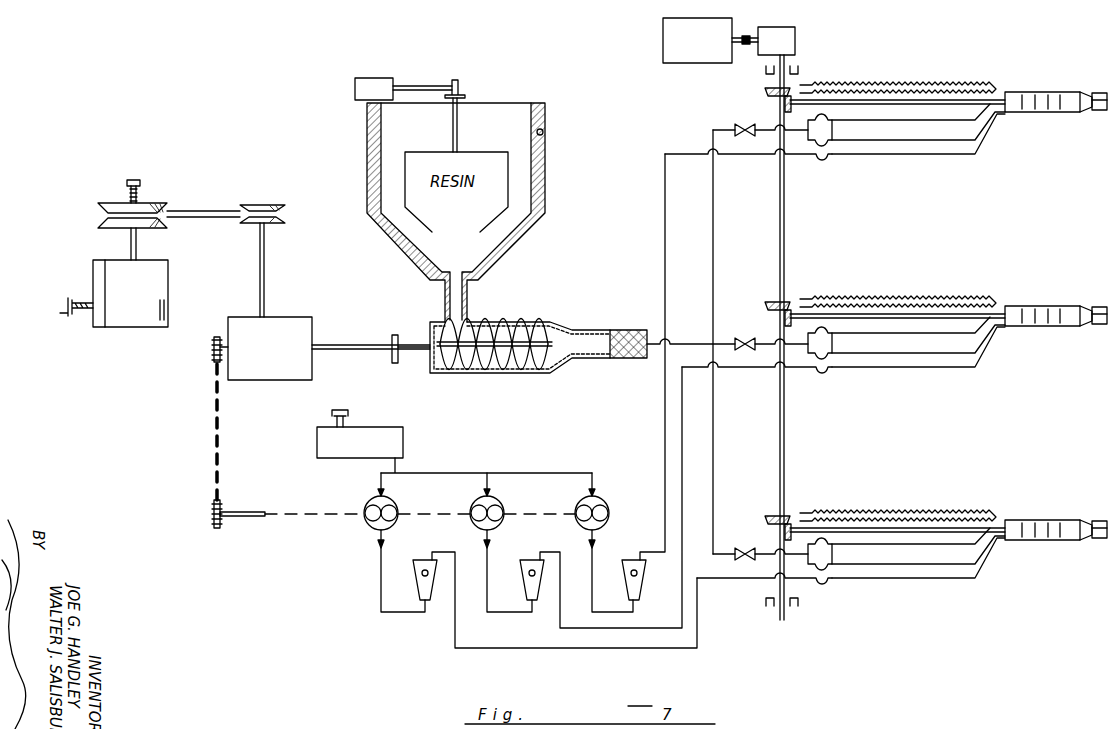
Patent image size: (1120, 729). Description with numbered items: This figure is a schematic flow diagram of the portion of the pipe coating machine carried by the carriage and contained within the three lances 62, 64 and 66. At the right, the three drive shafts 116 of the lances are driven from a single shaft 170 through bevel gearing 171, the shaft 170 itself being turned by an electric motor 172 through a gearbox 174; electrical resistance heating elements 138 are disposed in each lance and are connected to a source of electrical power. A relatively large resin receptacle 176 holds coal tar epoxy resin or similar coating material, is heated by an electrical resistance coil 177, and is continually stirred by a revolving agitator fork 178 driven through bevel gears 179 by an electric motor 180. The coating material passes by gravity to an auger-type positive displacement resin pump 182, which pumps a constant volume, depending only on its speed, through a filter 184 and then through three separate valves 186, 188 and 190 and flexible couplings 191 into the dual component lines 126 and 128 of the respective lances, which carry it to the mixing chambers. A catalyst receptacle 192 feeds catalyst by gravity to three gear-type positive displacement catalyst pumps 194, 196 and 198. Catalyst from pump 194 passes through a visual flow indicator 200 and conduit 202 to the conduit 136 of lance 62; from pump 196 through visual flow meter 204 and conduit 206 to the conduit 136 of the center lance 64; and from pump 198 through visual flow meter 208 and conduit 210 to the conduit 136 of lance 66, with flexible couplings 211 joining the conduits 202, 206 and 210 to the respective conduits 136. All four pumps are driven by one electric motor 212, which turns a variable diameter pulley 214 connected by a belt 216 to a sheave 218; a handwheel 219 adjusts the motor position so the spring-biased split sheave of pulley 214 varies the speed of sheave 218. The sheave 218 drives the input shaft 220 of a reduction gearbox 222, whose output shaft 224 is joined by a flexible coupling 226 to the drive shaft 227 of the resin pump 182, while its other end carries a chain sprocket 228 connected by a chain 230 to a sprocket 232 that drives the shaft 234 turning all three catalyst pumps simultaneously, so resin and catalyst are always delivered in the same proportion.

The lance 62 is at (1056, 516).
The lance 64 is at (1056, 303).
The lance 66 is at (1050, 92).
The drive shaft 116 is at (895, 105).
The component line 126 is at (913, 121).
The component line 128 is at (928, 130).
The conduit 136 is at (892, 156).
The electrical resistance heating element 138 is at (933, 85).
The shaft 170 is at (786, 84).
The bevel gearing 171 is at (768, 97).
The electric motor 172 is at (697, 63).
The gearbox 174 is at (790, 37).
The resin receptacle 176 is at (544, 132).
The electrical resistance coil 177 is at (546, 152).
The agitator fork 178 is at (458, 122).
The bevel gears 179 is at (464, 87).
The electric motor 180 is at (376, 86).
The resin pump 182 is at (497, 322).
The filter 184 is at (627, 330).
The valve 186 is at (749, 546).
The valve 188 is at (748, 338).
The valve 190 is at (746, 124).
The flexible coupling 191 is at (829, 128).
The catalyst receptacle 192 is at (362, 428).
The catalyst pump 194 is at (390, 505).
The catalyst pump 196 is at (495, 505).
The catalyst pump 198 is at (600, 505).
The visual flow indicator 200 is at (423, 571).
The conduit 202 is at (663, 650).
The visual flow meter 204 is at (530, 571).
The conduit 206 is at (684, 618).
The visual flow meter 208 is at (636, 582).
The conduit 210 is at (664, 530).
The flexible coupling 211 is at (829, 158).
The electric motor 212 is at (118, 262).
The variable diameter pulley 214 is at (160, 208).
The belt 216 is at (196, 210).
The sheave 218 is at (266, 205).
The handwheel 219 is at (64, 304).
The input shaft 220 is at (266, 247).
The reduction gearbox 222 is at (287, 320).
The output shaft 224 is at (220, 340).
The flexible coupling 226 is at (393, 333).
The drive shaft 227 is at (413, 352).
The chain sprocket 228 is at (212, 348).
The chain 230 is at (213, 428).
The sprocket 232 is at (212, 519).
The shaft 234 is at (240, 512).